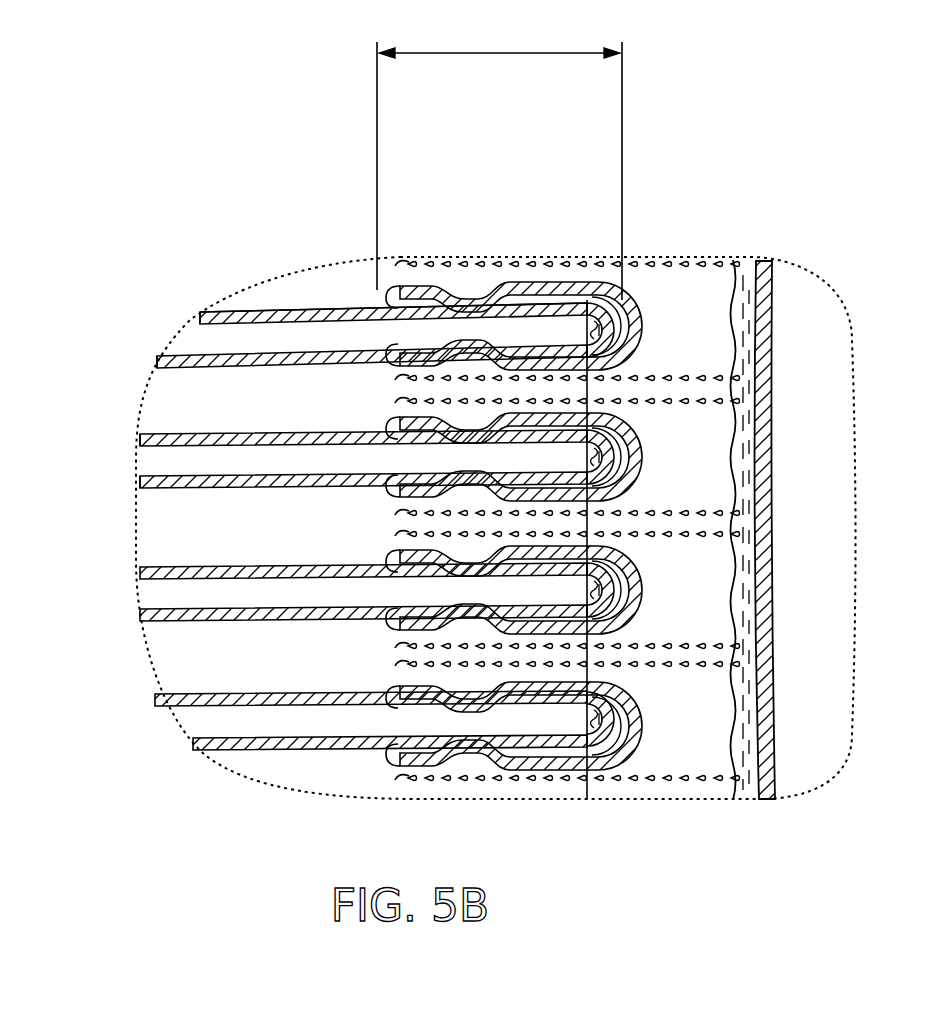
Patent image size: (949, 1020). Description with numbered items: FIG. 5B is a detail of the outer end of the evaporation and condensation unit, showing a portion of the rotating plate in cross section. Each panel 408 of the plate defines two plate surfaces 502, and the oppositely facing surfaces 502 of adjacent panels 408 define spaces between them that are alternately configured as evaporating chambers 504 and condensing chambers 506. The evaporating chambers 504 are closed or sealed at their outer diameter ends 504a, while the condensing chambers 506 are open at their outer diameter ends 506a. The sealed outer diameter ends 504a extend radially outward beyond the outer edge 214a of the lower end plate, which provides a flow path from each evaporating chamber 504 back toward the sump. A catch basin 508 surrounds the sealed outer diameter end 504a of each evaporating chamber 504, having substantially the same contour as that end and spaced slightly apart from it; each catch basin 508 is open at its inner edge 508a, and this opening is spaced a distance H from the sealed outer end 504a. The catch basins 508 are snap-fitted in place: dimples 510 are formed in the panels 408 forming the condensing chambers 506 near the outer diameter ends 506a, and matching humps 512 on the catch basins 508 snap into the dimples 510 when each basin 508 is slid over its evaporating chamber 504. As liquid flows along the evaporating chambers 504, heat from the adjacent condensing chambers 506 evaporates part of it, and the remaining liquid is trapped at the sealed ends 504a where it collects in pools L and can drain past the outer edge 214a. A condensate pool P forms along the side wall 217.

The panel 408 is at (236, 311).
The plate surface 502 is at (228, 310).
The evaporating chamber 504 is at (235, 348).
The outer diameter end of evaporating chamber 504a is at (613, 465).
The condensing chamber 506 is at (222, 418).
The outer diameter end of condensing chamber 506a is at (607, 385).
The catch basin 508 is at (617, 428).
The inner edge of catch basin 508a is at (383, 500).
The dimple 510 is at (527, 278).
The hump 512 is at (424, 385).
The outer edge of lower end plate 214a is at (587, 728).
The side wall 217 is at (770, 304).
The distance H is at (499, 163).
The pool L is at (603, 412).
The condensate pool P is at (748, 766).